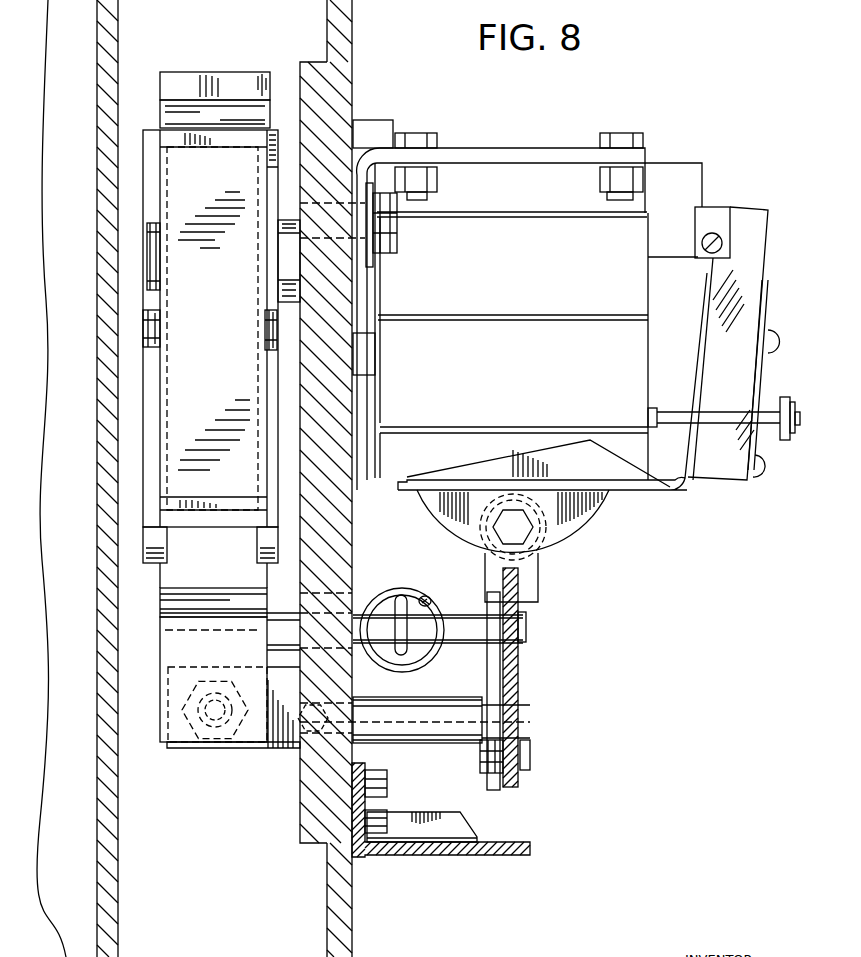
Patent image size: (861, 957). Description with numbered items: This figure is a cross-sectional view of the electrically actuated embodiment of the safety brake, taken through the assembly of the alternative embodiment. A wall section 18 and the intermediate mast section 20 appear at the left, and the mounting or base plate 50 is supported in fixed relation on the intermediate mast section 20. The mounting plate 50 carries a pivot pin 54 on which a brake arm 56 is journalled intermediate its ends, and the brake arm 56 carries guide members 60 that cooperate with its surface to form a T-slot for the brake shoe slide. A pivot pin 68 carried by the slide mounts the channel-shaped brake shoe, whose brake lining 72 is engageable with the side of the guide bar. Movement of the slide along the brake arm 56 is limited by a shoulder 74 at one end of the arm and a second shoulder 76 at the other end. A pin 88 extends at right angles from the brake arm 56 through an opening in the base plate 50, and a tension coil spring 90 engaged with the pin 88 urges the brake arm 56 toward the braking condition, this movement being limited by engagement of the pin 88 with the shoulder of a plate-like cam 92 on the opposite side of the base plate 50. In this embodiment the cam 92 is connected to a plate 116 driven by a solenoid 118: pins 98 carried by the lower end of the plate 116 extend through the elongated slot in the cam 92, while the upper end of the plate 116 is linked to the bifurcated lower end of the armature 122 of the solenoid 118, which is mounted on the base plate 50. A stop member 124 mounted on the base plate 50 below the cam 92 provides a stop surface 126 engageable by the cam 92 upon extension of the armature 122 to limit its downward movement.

The wall 18 is at (120, 886).
The intermediate mast section 20 is at (340, 945).
The mounting or base plate 50 is at (340, 531).
The pivot pins 54 is at (150, 248).
The brake arms 56 is at (182, 648).
The guide members 60 is at (150, 535).
The pivot pin 68 is at (148, 330).
The brake lining 72 is at (215, 395).
The shoulder 74 is at (192, 104).
The second shoulder 76 is at (185, 612).
The pin 88 is at (467, 618).
The tension coil spring 90 is at (382, 593).
The cam 92 is at (495, 665).
The pins 98 is at (530, 753).
The plate 116 is at (513, 673).
The solenoid 118 is at (651, 505).
The armature 122 is at (558, 527).
The stop member 124 is at (455, 864).
The stop surface 126 is at (500, 842).